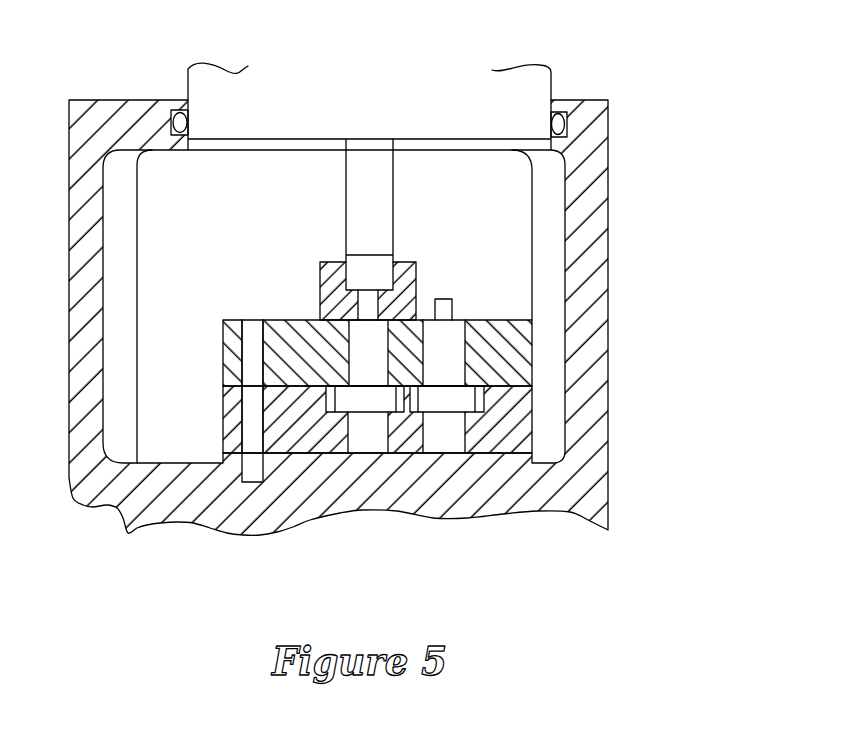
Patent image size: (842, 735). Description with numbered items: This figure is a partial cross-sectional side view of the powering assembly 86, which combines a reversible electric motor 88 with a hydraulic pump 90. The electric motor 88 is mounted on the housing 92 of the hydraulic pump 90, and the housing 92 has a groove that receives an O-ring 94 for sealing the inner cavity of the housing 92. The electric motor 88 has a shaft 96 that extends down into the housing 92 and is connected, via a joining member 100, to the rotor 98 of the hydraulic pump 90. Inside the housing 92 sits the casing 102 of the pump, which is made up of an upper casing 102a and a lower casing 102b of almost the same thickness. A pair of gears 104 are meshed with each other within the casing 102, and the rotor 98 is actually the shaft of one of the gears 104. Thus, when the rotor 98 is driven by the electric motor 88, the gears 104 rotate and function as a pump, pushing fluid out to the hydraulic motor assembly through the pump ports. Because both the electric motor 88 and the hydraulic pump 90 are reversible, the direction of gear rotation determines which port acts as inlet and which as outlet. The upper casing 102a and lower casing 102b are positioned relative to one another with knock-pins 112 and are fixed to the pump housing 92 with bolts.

The powering assembly 86 is at (435, 298).
The reversible electric motor 88 is at (523, 97).
The hydraulic pump 90 is at (507, 411).
The housing 92 is at (598, 497).
The O-ring 94 is at (565, 119).
The shaft 96 is at (395, 199).
The rotor 98 is at (367, 307).
The joining member 100 is at (415, 282).
The casing 102 is at (512, 376).
The upper casing 102a is at (512, 352).
The lower casing 102b is at (515, 422).
The gears 104 is at (437, 402).
The knock-pins 112 is at (253, 475).